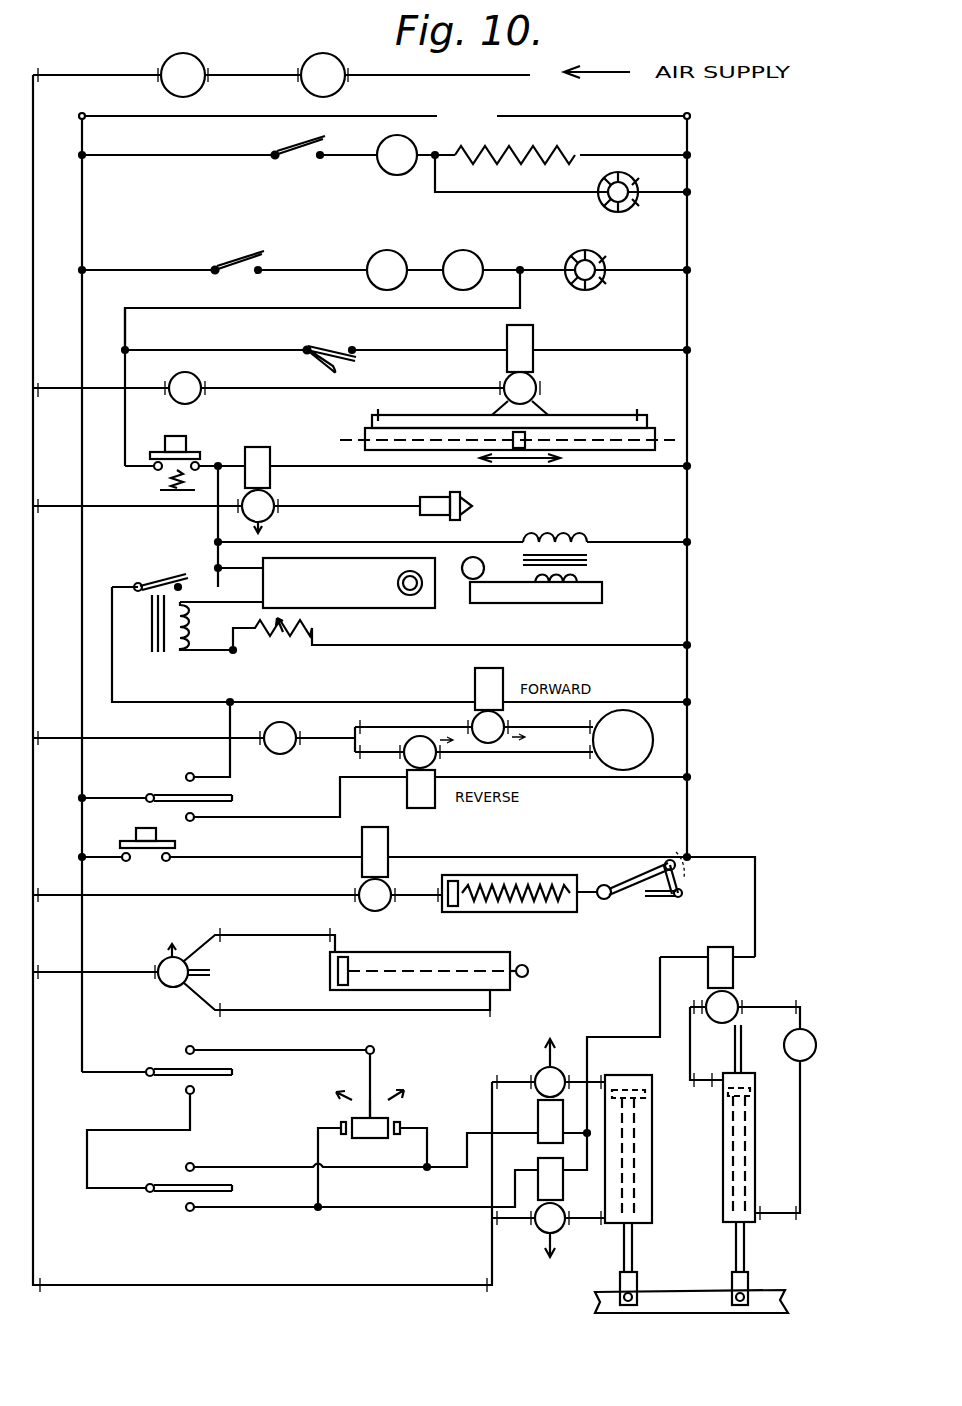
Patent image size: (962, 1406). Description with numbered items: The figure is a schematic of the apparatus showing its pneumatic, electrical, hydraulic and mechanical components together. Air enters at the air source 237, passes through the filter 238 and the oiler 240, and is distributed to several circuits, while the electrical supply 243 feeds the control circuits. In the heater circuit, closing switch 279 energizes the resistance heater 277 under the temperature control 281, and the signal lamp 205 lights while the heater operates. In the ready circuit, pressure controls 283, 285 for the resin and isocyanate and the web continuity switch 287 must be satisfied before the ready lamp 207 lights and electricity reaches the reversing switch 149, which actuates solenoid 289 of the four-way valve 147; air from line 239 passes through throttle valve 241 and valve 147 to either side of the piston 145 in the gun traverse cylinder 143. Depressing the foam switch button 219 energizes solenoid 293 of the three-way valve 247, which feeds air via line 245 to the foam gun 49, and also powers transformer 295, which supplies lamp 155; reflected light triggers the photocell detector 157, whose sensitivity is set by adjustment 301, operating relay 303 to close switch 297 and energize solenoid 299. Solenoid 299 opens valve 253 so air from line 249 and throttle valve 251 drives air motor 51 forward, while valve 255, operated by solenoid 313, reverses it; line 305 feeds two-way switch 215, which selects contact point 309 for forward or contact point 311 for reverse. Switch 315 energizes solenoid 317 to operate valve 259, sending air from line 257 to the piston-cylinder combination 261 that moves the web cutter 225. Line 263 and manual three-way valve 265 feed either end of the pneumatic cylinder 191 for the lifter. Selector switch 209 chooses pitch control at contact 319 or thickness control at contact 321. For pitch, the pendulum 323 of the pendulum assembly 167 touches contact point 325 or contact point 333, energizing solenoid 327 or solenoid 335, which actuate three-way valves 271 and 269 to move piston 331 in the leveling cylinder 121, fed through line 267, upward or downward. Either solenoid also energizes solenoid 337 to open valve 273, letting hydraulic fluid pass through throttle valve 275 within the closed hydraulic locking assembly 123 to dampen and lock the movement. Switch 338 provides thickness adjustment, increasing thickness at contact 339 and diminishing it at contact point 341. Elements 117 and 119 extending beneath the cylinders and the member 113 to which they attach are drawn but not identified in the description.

The oiler 240 is at (168, 58).
The filter 238 is at (312, 55).
The air source 237 is at (512, 80).
The electrical supply 243 is at (478, 118).
The switch 279 is at (298, 162).
The temperature control 281 is at (388, 175).
The resistance heater 277 is at (555, 148).
The signal lamp 205 is at (600, 200).
The web continuity switch 287 is at (246, 262).
The pressure control 283 is at (385, 250).
The pressure control 285 is at (475, 250).
The ready lamp 207 is at (600, 255).
The reversing switch 149 is at (340, 343).
The line 239 is at (140, 385).
The solenoid 289 is at (540, 335).
The throttle valve 241 is at (205, 378).
The solenoid-controlled four-way valve 147 is at (540, 382).
The gun traverse circuit cylinder 143 is at (570, 425).
The piston 145 is at (510, 436).
The foam switch button 219 is at (185, 440).
The solenoid 293 is at (263, 446).
The three-way solenoid valve 247 is at (276, 500).
The line 245 is at (90, 510).
The foam gun 49 is at (465, 497).
The transformer 295 is at (590, 550).
The lamp 155 is at (480, 578).
The photocell detector 157 is at (415, 595).
The switch 297 is at (152, 580).
The relay 303 is at (165, 660).
The adjustment 301 is at (300, 650).
The solenoid 299 is at (475, 682).
The line 249 is at (140, 732).
The throttle valve 251 is at (292, 726).
The solenoid-controlled valve 253 is at (475, 720).
The solenoid-controlled valve 255 is at (405, 762).
The air motor 51 is at (652, 743).
The contact point 309 is at (200, 765).
The two-way switch 215 is at (228, 792).
The line 305 is at (108, 792).
The contact point 311 is at (205, 822).
The solenoid 313 is at (432, 798).
The switch 315 is at (142, 828).
The solenoid 317 is at (390, 842).
The pneumatic line 257 is at (240, 893).
The solenoid-controlled valve 259 is at (360, 886).
The piston-cylinder combination 261 is at (505, 912).
The web cutter 225 is at (648, 898).
The solenoid 337 is at (733, 965).
The solenoid-controlled valve 273 is at (738, 998).
The throttle valve 275 is at (818, 1040).
The line 263 is at (115, 962).
The manual three-way valve 265 is at (172, 990).
The pneumatic cylinder 191 is at (438, 952).
The selector switch 209 is at (225, 1078).
The contact 319 is at (200, 1046).
The contact 321 is at (182, 1094).
The switch 338 is at (165, 1185).
The contact 339 is at (194, 1163).
The contact point 341 is at (186, 1212).
The pitch detection and control device 167 is at (396, 1110).
The pendulum 323 is at (372, 1112).
The contact point 325 is at (340, 1126).
The contact point 333 is at (403, 1125).
The solenoid-controlled valve 269 is at (560, 1066).
The three-way valve 271 is at (535, 1232).
The solenoid 335 is at (538, 1120).
The solenoid 327 is at (490, 1192).
The piston 331 is at (643, 1090).
The pitch- and level-control piston-cylinder combination 121 is at (645, 1115).
The piston rod 117 is at (632, 1240).
The locking level and thickness control assembly 123 is at (723, 1165).
The piston rod 119 is at (745, 1240).
The frame 113 is at (780, 1305).
The line 267 is at (312, 1285).